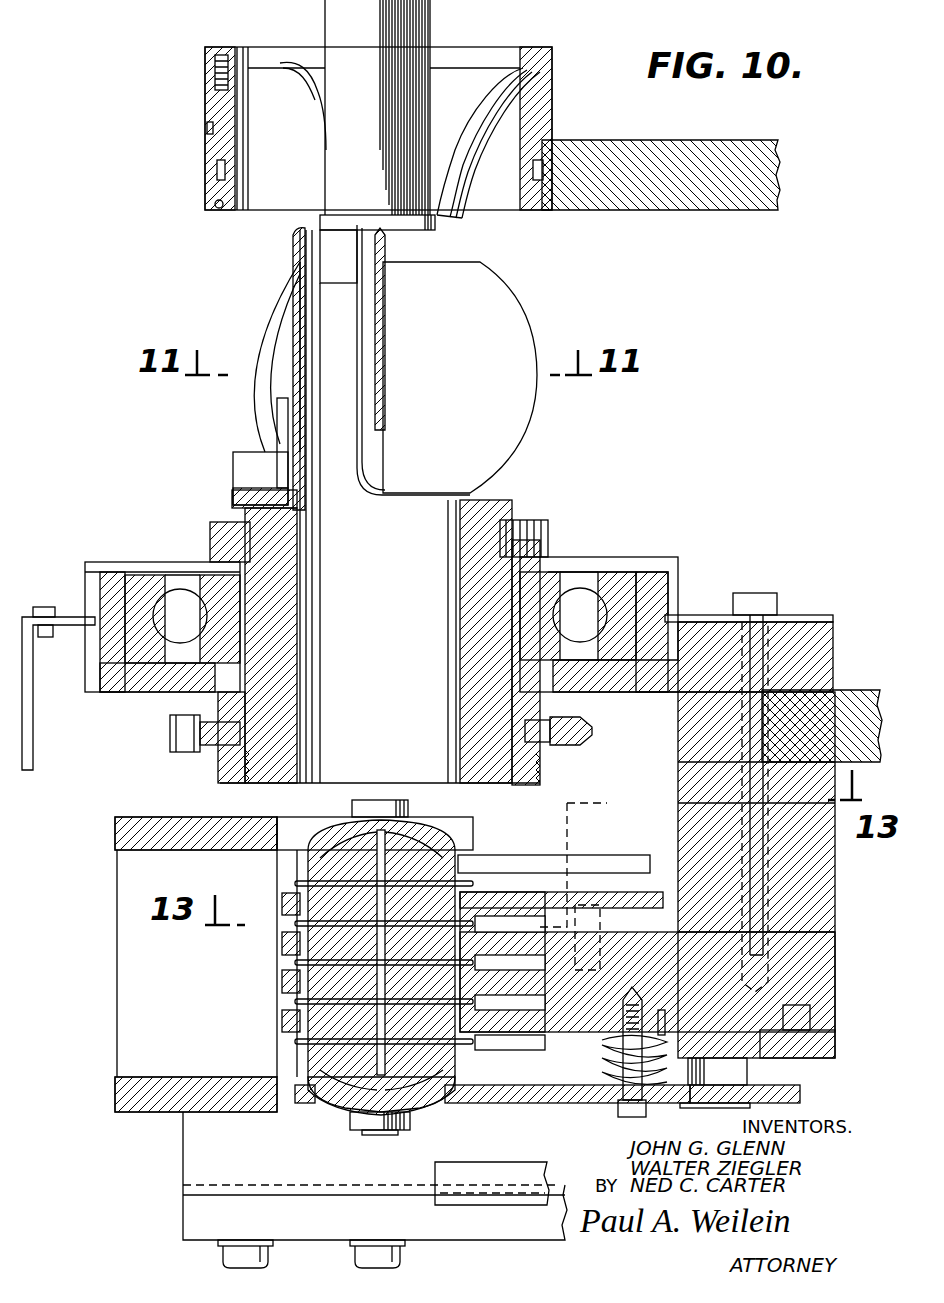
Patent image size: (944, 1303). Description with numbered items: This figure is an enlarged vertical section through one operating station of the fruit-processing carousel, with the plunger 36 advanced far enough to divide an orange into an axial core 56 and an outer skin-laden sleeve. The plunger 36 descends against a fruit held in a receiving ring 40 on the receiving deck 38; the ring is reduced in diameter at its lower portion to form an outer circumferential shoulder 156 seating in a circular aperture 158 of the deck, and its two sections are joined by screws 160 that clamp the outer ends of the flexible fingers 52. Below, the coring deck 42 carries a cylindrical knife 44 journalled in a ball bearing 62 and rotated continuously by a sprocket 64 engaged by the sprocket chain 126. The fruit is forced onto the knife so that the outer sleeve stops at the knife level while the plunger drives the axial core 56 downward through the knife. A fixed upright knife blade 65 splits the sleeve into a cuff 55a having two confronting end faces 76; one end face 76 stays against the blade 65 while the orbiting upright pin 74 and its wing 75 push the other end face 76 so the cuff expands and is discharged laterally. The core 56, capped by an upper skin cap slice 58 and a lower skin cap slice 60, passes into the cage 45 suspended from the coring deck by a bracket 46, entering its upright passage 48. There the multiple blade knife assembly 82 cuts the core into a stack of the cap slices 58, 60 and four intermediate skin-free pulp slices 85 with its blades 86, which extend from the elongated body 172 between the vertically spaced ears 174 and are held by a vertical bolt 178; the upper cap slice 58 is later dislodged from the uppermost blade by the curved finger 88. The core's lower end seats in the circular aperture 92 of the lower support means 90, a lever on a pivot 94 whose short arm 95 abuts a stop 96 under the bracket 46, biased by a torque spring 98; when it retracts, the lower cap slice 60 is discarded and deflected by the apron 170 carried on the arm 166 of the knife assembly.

The plunger 36 is at (431, 30).
The receiving deck 38 is at (781, 185).
The receiving ring 40 is at (553, 108).
The coring deck 42 is at (855, 700).
The cylindrical knife 44 is at (293, 318).
The cage 45 is at (282, 984).
The bracket 46 is at (836, 870).
The upright passage 48 is at (472, 900).
The flexible finger 52 is at (316, 102).
The cuff 55a is at (540, 322).
The axial core 56 is at (322, 955).
The upper skin cap slice 58 is at (458, 824).
The lower skin cap slice 60 is at (440, 1112).
The ball bearing 62 is at (579, 590).
The sprocket 64 is at (558, 746).
The upright knife blade 65 is at (388, 332).
The upright pin 74 is at (277, 420).
The wing 75 is at (240, 468).
The end face 76 is at (272, 343).
The multiple blade knife assembly 82 is at (110, 1010).
The intermediate skin-free pulp slice 85 is at (290, 942).
The blade 86 is at (332, 880).
The curved finger 88 is at (512, 856).
The lower support means 90 is at (542, 1104).
The circular aperture 92 is at (325, 1114).
The pivot 94 is at (612, 1090).
The short arm 95 is at (802, 1096).
The stop 96 is at (749, 1078).
The torque spring 98 is at (604, 1056).
The sprocket chain 126 is at (184, 754).
The outer circumferential shoulder 156 is at (207, 130).
The circular aperture 158 is at (219, 212).
The screw 160 is at (224, 50).
The arm 166 is at (196, 1216).
The apron 170 is at (549, 1174).
The elongated body 172 is at (128, 836).
The ear 174 is at (345, 1114).
The vertical bolt 178 is at (382, 800).